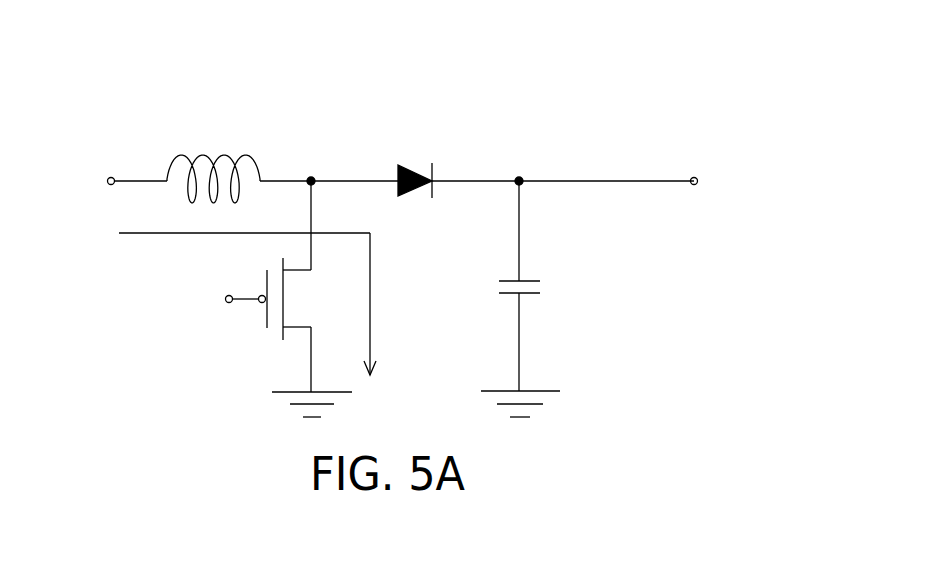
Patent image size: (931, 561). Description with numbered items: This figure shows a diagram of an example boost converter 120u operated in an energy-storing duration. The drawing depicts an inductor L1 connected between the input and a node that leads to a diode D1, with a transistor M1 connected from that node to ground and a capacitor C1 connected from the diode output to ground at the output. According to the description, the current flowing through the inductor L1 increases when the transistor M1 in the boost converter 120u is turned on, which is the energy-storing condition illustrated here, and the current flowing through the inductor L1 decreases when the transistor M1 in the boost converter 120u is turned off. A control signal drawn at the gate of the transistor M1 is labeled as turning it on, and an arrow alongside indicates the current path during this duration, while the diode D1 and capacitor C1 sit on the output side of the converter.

The boost converter 120u is at (790, 53).
The inductor L1 is at (213, 191).
The diode D1 is at (415, 166).
The transistor M1 is at (289, 299).
The output capacitor C1 is at (529, 299).